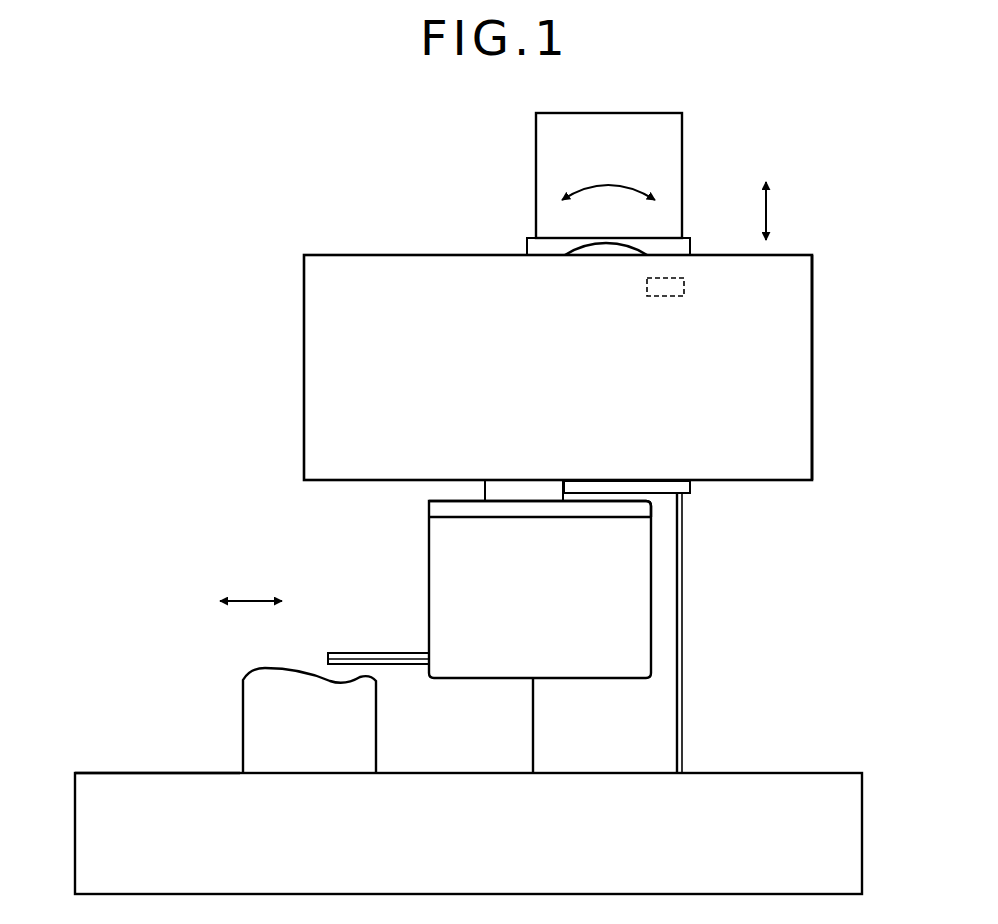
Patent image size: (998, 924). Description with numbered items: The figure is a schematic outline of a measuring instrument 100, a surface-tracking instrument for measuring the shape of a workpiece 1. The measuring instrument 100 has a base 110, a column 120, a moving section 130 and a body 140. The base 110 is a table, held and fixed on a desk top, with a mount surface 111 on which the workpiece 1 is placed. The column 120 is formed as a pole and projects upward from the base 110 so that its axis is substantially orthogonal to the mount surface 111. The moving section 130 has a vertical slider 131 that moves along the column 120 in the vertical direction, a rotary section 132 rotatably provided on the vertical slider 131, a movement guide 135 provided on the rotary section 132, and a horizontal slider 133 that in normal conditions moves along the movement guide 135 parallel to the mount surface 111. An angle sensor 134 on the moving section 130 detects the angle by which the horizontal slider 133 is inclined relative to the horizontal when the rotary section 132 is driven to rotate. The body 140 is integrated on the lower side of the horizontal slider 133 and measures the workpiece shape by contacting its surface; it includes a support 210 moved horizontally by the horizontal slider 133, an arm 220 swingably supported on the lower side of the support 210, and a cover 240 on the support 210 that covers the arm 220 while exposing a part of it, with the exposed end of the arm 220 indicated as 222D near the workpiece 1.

The measuring instrument 100 is at (864, 647).
The base 110 is at (144, 787).
The mount surface 111 is at (102, 773).
The workpiece 1 is at (254, 697).
The arm 220 is at (372, 653).
The end of table 222D is at (326, 670).
The cover 240 is at (443, 559).
The support 210 is at (443, 509).
The horizontal slider 133 is at (527, 487).
The body 140 is at (652, 579).
The moving section 130 is at (820, 294).
The movement guide 135 is at (804, 362).
The angle sensor 134 is at (686, 288).
The vertical slider 131 is at (690, 248).
The rotary section 132 is at (597, 248).
The column 120 is at (673, 143).